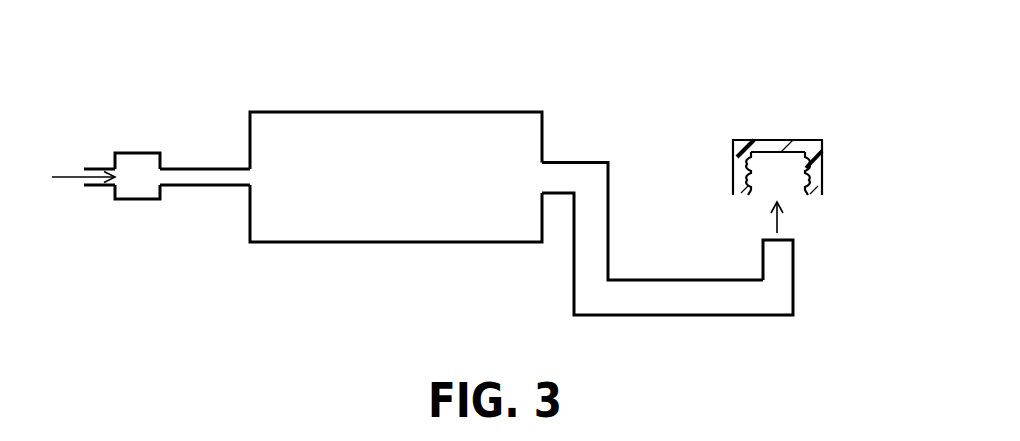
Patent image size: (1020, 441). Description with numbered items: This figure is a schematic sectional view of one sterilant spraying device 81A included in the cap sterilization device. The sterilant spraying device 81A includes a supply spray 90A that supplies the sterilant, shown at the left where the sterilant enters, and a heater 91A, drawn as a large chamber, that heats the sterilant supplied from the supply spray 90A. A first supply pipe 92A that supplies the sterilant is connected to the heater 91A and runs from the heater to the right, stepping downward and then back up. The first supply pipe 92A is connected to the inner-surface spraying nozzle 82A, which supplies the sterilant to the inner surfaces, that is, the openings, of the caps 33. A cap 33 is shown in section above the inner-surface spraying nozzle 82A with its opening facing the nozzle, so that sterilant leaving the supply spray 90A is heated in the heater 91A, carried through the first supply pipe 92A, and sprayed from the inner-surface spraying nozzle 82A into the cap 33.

The sterilant spraying device 81A is at (488, 96).
The supply spray 90A is at (140, 168).
The heater 91A is at (402, 132).
The first supply pipe 92A is at (677, 299).
The inner-surface spraying nozzle 82A is at (782, 264).
The cap 33 is at (821, 172).